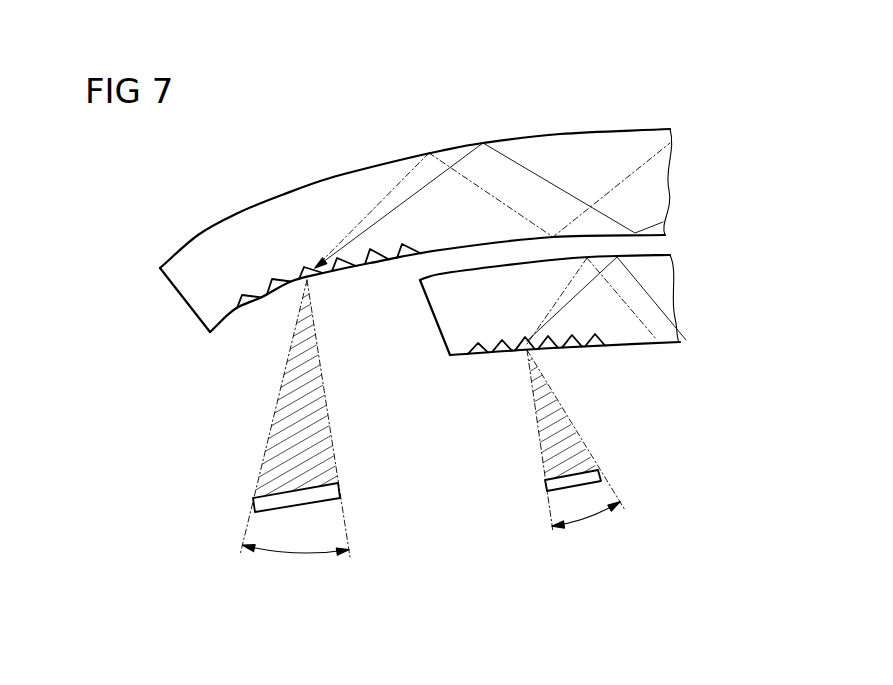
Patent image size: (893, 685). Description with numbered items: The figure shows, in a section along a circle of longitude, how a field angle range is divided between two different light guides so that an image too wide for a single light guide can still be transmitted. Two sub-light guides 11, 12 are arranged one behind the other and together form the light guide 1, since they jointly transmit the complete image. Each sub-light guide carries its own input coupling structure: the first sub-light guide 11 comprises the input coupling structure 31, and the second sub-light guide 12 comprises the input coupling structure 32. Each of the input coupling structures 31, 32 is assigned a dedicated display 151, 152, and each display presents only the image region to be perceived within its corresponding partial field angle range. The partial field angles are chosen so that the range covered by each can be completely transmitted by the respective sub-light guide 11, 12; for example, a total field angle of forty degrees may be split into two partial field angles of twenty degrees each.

The light guide 1 is at (318, 160).
The sub-light guide 11 is at (590, 148).
The sub-light guide 12 is at (628, 336).
The input coupling structure 31 is at (258, 303).
The input coupling structure 32 is at (492, 350).
The display 151 is at (333, 490).
The display 152 is at (597, 478).